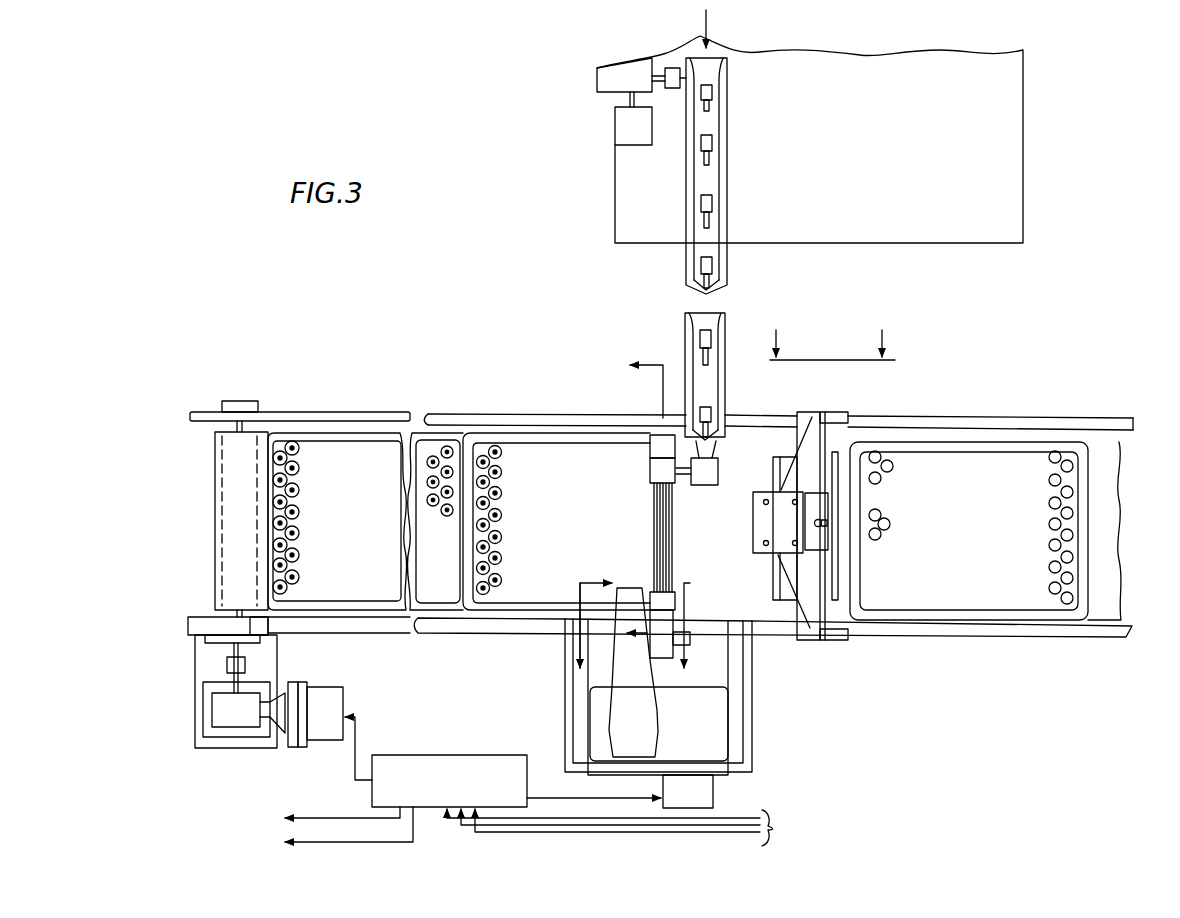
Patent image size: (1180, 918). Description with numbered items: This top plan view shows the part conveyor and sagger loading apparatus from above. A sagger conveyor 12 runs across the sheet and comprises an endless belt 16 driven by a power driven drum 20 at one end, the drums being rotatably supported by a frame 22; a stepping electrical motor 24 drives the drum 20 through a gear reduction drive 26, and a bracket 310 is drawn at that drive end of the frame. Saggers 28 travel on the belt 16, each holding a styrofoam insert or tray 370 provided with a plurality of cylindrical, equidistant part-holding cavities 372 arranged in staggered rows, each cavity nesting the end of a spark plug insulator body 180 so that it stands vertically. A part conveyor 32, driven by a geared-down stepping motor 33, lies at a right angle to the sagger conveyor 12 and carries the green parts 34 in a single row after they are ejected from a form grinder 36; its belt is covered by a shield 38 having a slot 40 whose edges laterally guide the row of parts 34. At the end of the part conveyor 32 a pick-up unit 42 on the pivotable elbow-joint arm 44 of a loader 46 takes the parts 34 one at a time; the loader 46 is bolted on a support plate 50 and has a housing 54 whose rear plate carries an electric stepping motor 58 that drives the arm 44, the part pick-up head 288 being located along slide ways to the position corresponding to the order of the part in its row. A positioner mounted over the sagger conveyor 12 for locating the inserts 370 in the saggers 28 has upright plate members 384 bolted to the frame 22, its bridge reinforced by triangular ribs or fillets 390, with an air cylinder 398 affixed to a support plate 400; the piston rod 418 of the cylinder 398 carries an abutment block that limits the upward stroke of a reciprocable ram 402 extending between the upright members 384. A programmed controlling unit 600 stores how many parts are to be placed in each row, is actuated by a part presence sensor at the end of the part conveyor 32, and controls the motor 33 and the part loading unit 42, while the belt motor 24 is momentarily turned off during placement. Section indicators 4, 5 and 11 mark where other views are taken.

The section line 4- 4 is at (627, 614).
The section line 5- 5 is at (632, 509).
The section line 11- 11 is at (832, 334).
The sagger conveyor 12 is at (908, 414).
The endless belt 16 is at (247, 440).
The power driven drum 20 is at (222, 523).
The frame 22 is at (385, 412).
The stepping electrical motor 24 is at (326, 731).
The gear reduction drive 26 is at (246, 720).
The sagger 28 is at (511, 435).
The part conveyor 32 is at (699, 249).
The geared-down stepping motor 33 is at (636, 130).
The parts 34 is at (527, 339).
The form grinder 36 is at (1027, 178).
The cover or shield 38 is at (728, 249).
The slot 40 is at (706, 238).
The pick-up unit 42 is at (648, 483).
The elbow-joint arm 44 is at (665, 663).
The loader 46 is at (658, 758).
The support plate 50 is at (738, 745).
The housing 54 is at (722, 718).
The electric stepping motor 58 is at (713, 791).
The spark plug insulator body 180 is at (714, 95).
The part pick-up head 288 is at (720, 477).
The bracket 310 is at (258, 633).
The styrofoam insert or tray 370 is at (352, 460).
The part-holding cavities 372 is at (956, 495).
The upright plate members 384 is at (826, 414).
The triangularly shaped ribs or fillets 390 is at (797, 466).
The air cylinder 398 is at (865, 510).
The support plate 400 is at (753, 519).
The reciprocable ram 402 is at (772, 576).
The piston rod 418 is at (830, 528).
The controlling unit 600 is at (480, 756).